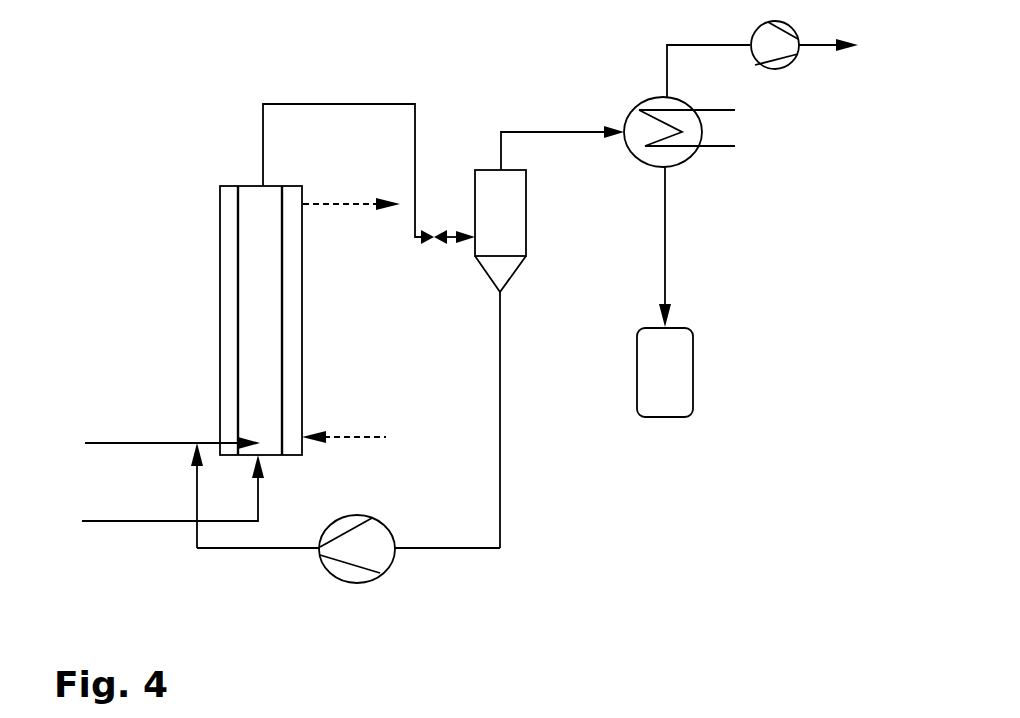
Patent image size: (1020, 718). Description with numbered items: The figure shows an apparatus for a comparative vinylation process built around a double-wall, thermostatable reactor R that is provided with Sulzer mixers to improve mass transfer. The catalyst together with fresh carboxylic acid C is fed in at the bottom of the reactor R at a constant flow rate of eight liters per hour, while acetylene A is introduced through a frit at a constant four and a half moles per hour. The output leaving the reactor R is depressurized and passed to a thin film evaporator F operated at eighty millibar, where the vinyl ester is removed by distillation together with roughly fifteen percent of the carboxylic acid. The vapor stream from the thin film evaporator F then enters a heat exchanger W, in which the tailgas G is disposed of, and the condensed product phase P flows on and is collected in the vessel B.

The reactor R is at (289, 320).
The carboxylic acid C is at (158, 419).
The acetylene A is at (160, 488).
The thin film evaporator F is at (515, 346).
The heat exchanger W is at (707, 131).
The tailgas G is at (781, 59).
The product phase P is at (686, 247).
The vessel B is at (681, 372).